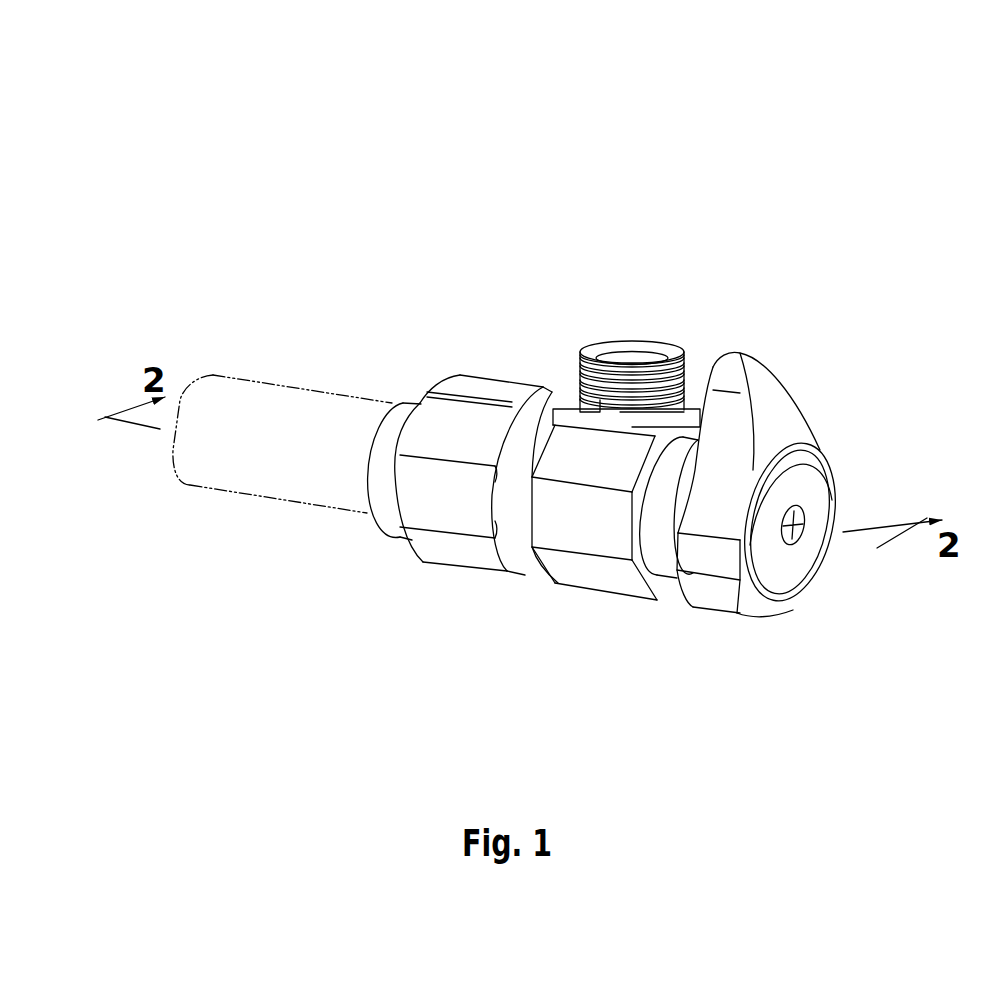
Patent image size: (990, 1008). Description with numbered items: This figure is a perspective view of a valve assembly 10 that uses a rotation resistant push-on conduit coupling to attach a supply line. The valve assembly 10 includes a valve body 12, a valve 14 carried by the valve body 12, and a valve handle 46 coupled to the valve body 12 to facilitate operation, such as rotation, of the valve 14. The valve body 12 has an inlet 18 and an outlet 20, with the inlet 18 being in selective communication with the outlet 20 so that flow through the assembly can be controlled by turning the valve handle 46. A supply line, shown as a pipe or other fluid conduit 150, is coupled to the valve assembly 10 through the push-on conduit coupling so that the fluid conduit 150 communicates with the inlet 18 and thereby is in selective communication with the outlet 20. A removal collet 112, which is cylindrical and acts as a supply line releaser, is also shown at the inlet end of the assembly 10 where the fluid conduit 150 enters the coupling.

The valve assembly 10 is at (721, 182).
The valve body 12 is at (577, 604).
The valve 14 is at (678, 608).
The inlet 18 is at (420, 370).
The outlet 20 is at (600, 333).
The valve handle 46 is at (827, 440).
The removal collet 112 is at (388, 543).
The fluid conduit 150 is at (268, 385).